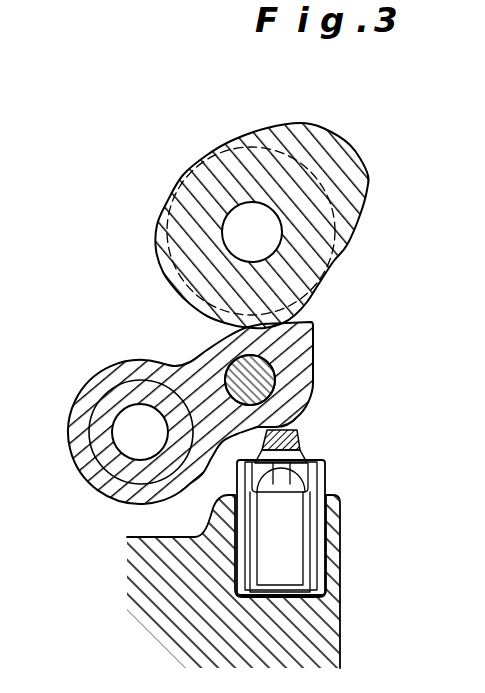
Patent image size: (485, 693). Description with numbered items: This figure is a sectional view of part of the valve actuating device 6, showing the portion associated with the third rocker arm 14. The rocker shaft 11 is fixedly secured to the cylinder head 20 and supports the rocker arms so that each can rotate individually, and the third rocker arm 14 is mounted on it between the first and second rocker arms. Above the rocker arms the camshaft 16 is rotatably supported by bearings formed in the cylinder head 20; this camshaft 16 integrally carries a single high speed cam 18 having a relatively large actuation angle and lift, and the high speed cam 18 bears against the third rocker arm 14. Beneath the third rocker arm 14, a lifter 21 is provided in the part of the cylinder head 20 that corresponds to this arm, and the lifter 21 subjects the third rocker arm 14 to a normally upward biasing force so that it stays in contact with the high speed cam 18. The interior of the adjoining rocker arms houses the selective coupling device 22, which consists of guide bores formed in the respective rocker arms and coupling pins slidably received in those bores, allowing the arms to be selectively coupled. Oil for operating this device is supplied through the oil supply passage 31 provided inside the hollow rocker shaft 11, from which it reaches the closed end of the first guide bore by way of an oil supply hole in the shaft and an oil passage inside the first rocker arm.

The valve actuating mechanism 6 is at (106, 279).
The rocker shaft 11 is at (109, 370).
The third rocker arm 14 is at (305, 398).
The camshaft 16 is at (195, 170).
The high speed cam 18 is at (353, 157).
The cylinder head 20 is at (341, 612).
The lifter 21 is at (335, 481).
The selective coupling device 22 is at (282, 375).
The oil supply passage 31 is at (114, 444).